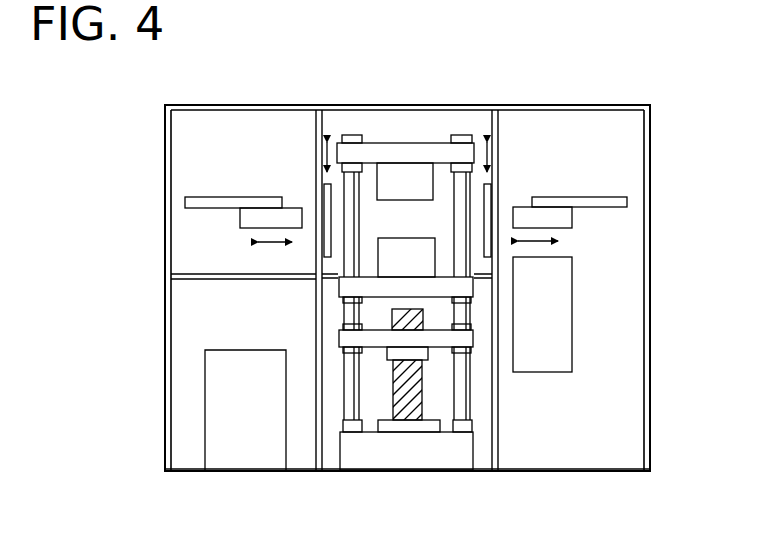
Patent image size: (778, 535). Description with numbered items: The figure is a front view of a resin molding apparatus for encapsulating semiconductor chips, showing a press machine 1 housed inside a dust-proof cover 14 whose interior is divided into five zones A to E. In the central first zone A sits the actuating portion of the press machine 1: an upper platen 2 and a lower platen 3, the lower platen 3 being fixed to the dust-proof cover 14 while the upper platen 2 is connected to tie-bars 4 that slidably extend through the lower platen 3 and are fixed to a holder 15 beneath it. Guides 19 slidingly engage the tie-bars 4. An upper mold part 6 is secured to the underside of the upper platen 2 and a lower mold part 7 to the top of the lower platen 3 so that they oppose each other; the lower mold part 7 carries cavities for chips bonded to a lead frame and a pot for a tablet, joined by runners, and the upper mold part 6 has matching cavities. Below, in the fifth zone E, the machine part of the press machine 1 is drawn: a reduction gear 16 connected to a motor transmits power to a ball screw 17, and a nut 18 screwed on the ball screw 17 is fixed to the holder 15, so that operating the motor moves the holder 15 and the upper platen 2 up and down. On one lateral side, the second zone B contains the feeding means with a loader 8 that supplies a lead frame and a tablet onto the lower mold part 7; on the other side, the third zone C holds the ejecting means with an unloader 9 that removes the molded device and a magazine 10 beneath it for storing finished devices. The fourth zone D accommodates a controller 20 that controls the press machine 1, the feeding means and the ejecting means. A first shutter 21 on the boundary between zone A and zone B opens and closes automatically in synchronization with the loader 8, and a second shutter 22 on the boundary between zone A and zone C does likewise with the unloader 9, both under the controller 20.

The press machine 1 is at (346, 136).
The upper platen 2 is at (437, 148).
The lower platen 3 is at (345, 291).
The tie-bars 4 is at (345, 317).
The upper mold part 6 is at (410, 173).
The lower mold part 7 is at (397, 258).
The loader 8 is at (229, 197).
The unloader 9 is at (558, 197).
The magazine 10 is at (555, 312).
The dust-proof cover 14 is at (652, 221).
The holder 15 is at (345, 345).
The reduction gear 16 is at (437, 452).
The ball screw 17 is at (407, 405).
The nut 18 is at (490, 388).
The guides 19 is at (480, 430).
The controller 20 is at (242, 452).
The first shutter 21 is at (307, 184).
The second shutter 22 is at (503, 202).
The first zone A is at (370, 120).
The second zone B is at (186, 143).
The third zone C is at (626, 159).
The fourth zone D is at (195, 336).
The fifth zone E is at (333, 408).